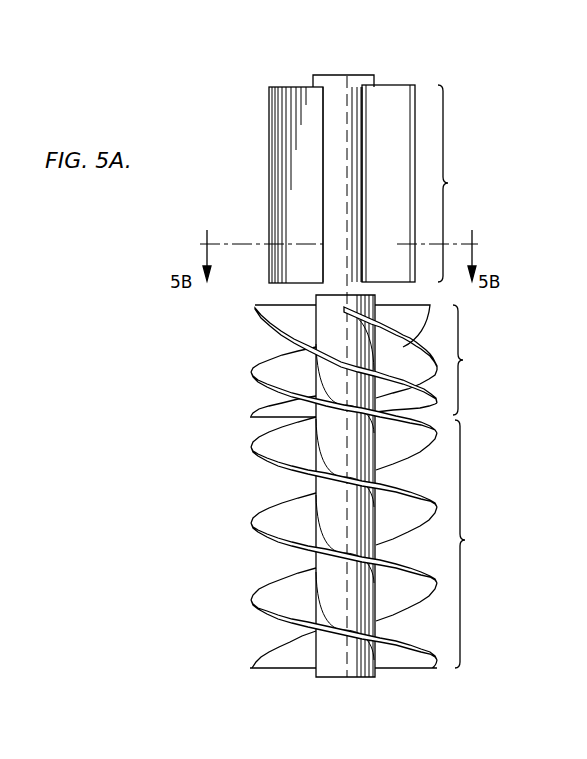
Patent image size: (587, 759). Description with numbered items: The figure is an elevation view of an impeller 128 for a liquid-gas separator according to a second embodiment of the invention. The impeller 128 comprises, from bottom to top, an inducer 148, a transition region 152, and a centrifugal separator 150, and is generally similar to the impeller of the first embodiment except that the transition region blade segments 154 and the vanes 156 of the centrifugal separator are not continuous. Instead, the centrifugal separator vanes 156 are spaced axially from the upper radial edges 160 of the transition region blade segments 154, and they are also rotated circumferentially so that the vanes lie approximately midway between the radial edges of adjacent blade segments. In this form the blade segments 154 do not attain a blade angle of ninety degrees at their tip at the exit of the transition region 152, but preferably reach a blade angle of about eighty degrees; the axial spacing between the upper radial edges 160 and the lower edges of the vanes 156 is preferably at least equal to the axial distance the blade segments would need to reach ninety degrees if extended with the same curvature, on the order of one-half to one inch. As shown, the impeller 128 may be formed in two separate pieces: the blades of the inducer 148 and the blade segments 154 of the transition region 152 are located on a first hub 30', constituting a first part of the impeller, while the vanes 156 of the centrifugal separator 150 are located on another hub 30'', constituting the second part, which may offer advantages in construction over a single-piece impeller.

The hub 30'' is at (363, 356).
The first hub 30' is at (381, 486).
The vanes 156 is at (289, 129).
The centrifugal separator 150 is at (461, 183).
The transition region 152 is at (475, 360).
The inducer 148 is at (477, 544).
The transition region blade segments 154 is at (345, 312).
The upper radial edges 160 is at (270, 305).
The impeller 128 is at (276, 476).